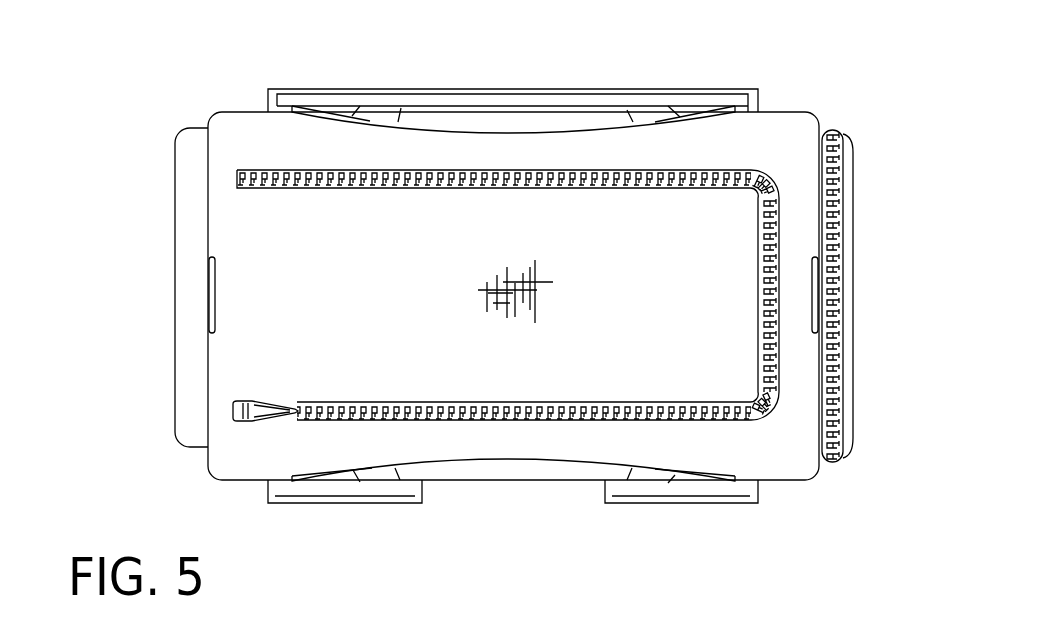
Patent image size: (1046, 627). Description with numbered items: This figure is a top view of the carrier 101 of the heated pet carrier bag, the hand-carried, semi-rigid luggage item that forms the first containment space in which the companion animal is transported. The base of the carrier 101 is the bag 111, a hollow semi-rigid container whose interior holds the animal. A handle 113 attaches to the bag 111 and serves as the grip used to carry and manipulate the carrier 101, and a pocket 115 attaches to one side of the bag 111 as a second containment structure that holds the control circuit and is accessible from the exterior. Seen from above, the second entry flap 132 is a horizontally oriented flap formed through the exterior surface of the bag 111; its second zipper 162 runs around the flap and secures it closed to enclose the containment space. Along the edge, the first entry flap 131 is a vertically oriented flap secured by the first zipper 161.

The carrier 101 is at (120, 108).
The bag 111 is at (230, 142).
The handle 113 is at (594, 121).
The pocket 115 is at (190, 177).
The first entry flap 131 is at (853, 350).
The second entry flap 132 is at (638, 282).
The first zipper 161 is at (833, 412).
The second zipper 162 is at (770, 335).